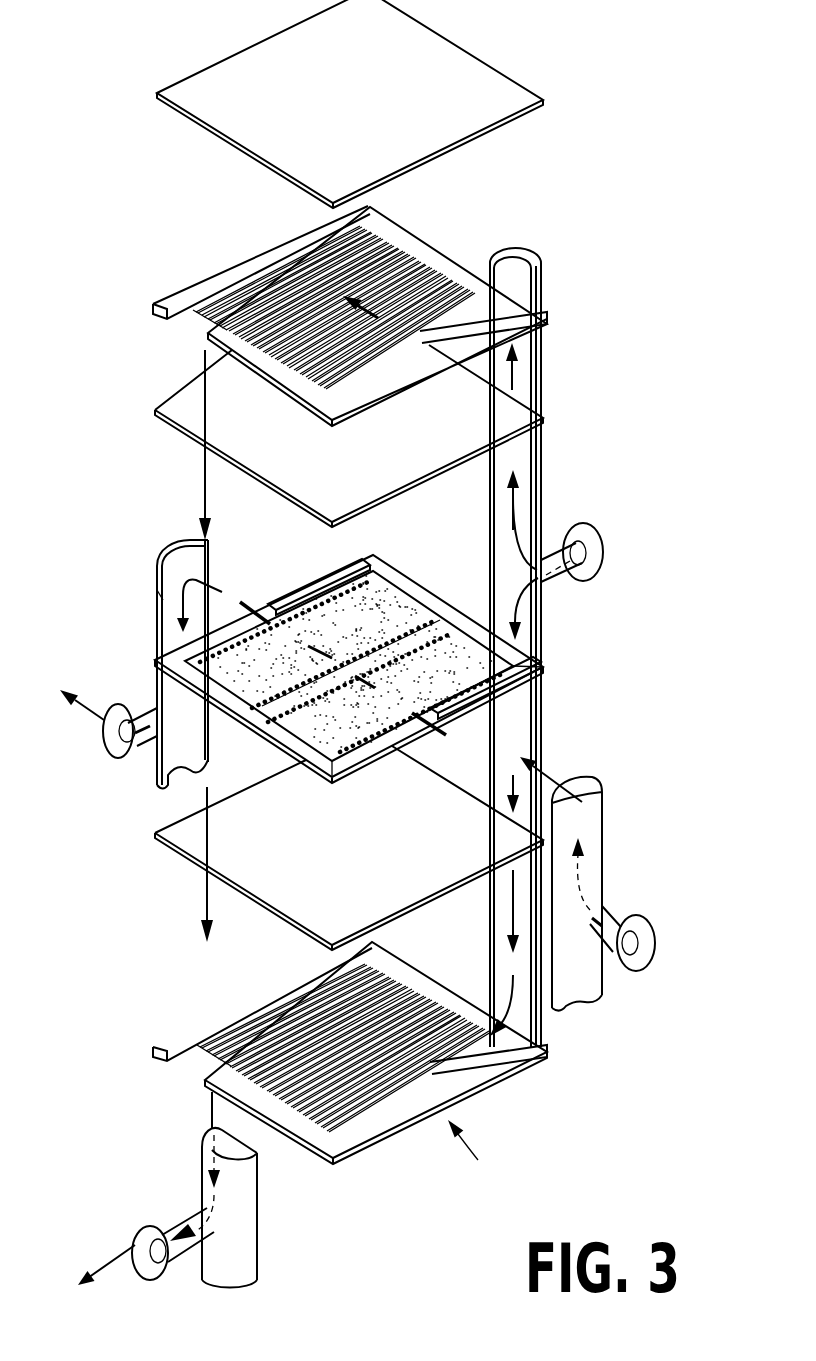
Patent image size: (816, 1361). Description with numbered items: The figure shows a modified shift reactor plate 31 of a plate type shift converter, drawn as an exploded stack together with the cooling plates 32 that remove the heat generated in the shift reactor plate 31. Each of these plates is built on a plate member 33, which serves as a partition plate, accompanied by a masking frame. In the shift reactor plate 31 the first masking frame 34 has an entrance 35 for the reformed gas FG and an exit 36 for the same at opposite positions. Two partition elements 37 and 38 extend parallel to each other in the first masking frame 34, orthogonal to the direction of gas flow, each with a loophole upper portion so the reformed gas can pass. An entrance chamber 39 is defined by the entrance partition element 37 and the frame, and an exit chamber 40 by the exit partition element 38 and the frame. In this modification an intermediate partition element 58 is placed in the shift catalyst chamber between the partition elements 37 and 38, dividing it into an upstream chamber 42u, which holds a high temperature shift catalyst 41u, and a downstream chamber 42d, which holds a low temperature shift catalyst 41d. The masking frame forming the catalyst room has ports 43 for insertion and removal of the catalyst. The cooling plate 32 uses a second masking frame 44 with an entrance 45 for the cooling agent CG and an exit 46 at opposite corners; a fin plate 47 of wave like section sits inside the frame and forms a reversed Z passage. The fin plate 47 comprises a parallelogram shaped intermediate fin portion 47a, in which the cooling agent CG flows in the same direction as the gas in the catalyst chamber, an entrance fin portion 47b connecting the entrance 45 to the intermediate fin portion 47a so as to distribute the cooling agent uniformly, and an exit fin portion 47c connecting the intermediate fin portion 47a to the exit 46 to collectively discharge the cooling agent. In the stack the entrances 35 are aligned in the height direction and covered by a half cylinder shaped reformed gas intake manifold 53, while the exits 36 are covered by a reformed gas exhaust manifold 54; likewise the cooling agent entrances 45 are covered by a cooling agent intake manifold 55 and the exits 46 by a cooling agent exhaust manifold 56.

The shift reactor plate 31 is at (138, 645).
The cooling plate 32 is at (474, 1140).
The plate member 33 is at (212, 78).
The first masking frame 34 is at (540, 657).
The entrance 35 is at (430, 730).
The exit 36 is at (257, 607).
The entrance partition element 37 is at (483, 703).
The exit partition element 38 is at (337, 637).
The entrance chamber 39 is at (360, 743).
The exit chamber 40 is at (160, 598).
The low temperature shift catalyst 41d is at (205, 702).
The high temperature shift catalyst 41u is at (542, 677).
The downstream chamber 42d is at (323, 600).
The upstream chamber 42u is at (395, 680).
The ports 43 is at (460, 608).
The second masking frame 44 is at (183, 290).
The entrance 45 is at (507, 265).
The exit 46 is at (193, 323).
The fin plate 47 is at (423, 280).
The intermediate fin portion 47a is at (387, 263).
The entrance fin portion 47b is at (547, 318).
The exit fin portion 47c is at (255, 263).
The reformed gas intake manifold 53 is at (593, 867).
The reformed gas exhaust manifold 54 is at (162, 543).
The cooling agent intake manifold 55 is at (541, 278).
The cooling agent exhaust manifold 56 is at (242, 1255).
The intermediate partition element 58 is at (407, 603).
The cooling agent CG is at (600, 556).
The reformed gas FG is at (637, 947).